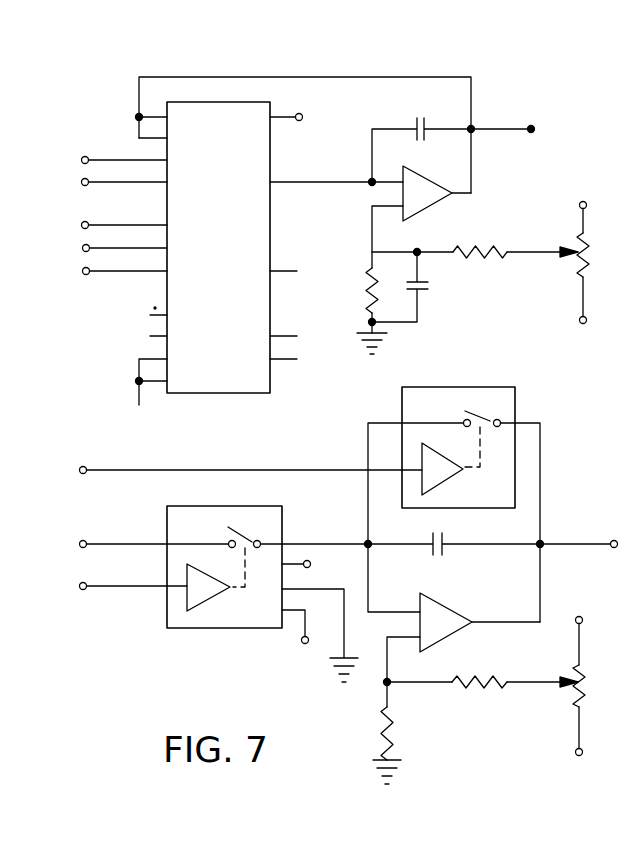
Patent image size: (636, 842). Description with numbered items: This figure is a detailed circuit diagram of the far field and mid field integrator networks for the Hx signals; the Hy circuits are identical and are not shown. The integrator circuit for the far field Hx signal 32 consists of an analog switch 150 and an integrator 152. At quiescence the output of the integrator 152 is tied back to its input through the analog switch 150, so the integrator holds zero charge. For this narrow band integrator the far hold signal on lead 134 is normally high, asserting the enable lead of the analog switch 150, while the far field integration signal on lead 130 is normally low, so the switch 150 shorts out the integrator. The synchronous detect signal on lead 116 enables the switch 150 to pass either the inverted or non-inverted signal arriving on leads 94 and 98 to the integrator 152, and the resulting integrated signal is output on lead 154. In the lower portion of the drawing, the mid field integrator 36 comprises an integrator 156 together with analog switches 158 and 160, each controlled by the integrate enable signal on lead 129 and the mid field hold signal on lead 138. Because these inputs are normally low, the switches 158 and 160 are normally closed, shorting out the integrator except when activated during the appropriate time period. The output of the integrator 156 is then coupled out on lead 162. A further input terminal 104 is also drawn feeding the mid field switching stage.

The far field Hx signal integrator circuit 32 is at (272, 70).
The mid field integrator 36 is at (289, 458).
The lead 94 is at (99, 160).
The lead 98 is at (108, 182).
The input signal line 104 is at (102, 541).
The lead 116 is at (105, 274).
The lead 129 is at (105, 468).
The lead 130 is at (88, 244).
The lead 134 is at (87, 221).
The lead 138 is at (87, 590).
The analog switch 150 is at (206, 102).
The integrator 152 is at (448, 158).
The lead 154 is at (531, 129).
The integrator 156 is at (500, 590).
The analog switch 158 is at (282, 527).
The analog switch 160 is at (515, 405).
The lead 162 is at (578, 541).